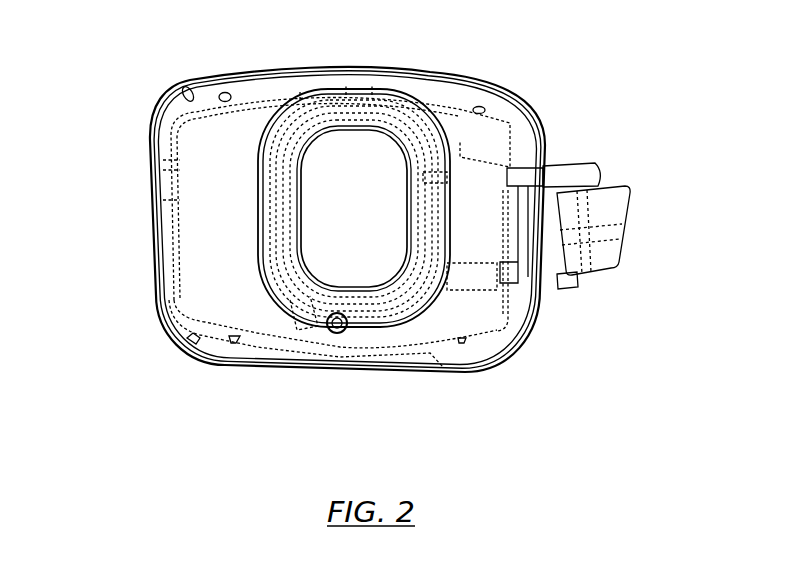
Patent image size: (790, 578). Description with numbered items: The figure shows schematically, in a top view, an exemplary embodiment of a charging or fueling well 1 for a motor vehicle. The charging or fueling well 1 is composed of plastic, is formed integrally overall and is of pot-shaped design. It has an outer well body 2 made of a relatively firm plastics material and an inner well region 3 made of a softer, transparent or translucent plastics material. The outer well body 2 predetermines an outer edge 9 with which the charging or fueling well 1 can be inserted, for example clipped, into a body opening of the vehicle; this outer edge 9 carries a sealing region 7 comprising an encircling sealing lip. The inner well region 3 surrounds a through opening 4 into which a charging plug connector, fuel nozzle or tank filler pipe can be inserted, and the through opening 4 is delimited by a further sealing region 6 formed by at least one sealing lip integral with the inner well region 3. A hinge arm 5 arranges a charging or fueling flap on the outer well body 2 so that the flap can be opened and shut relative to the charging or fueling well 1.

The charging or fueling well 1 is at (144, 41).
The outer well body 2 is at (480, 175).
The inner well region 3 is at (430, 245).
The through opening 4 is at (315, 190).
The hinge arm 5 is at (588, 232).
The sealing region 6 is at (400, 148).
The sealing region 7 is at (158, 253).
The outer edge 9 is at (365, 66).